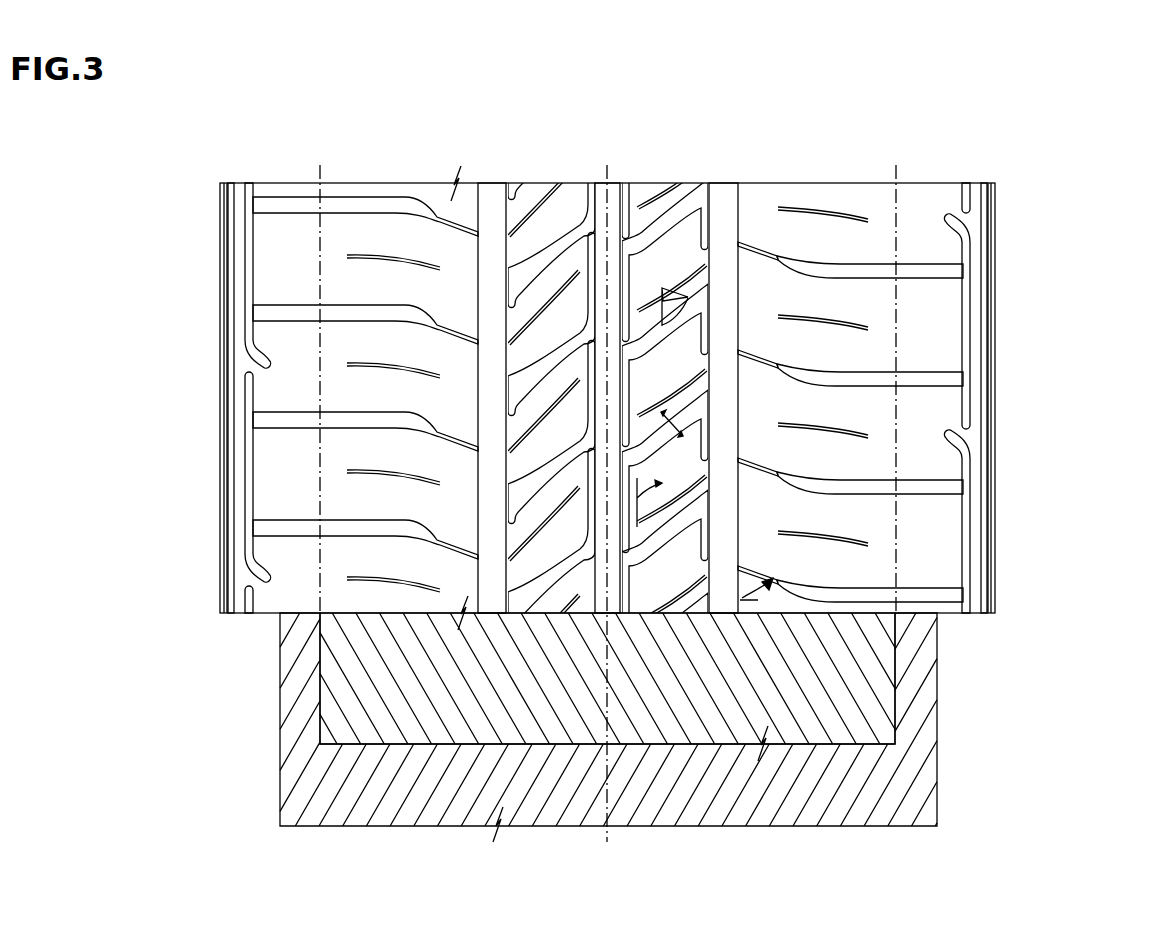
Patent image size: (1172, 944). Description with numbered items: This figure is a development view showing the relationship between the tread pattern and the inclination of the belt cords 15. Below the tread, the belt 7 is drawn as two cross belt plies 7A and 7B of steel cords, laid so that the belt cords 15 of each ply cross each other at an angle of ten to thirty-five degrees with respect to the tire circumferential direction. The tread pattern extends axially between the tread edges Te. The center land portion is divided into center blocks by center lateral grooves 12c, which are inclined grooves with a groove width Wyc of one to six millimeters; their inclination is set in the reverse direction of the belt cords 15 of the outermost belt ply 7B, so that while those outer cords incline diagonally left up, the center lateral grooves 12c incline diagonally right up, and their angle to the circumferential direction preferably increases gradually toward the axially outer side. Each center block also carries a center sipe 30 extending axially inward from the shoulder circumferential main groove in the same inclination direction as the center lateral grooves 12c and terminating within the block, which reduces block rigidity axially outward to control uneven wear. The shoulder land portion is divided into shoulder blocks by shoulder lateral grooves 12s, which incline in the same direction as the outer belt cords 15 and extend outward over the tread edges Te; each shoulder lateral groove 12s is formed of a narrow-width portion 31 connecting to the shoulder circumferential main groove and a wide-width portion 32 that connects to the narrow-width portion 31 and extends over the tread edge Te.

The tread edge Te is at (320, 183).
The center lateral groove 12c is at (673, 330).
The groove width of center lateral groove Wyc is at (690, 414).
The narrow-width portion 31 is at (740, 467).
The wide-width portion 32 is at (855, 480).
The shoulder lateral groove 12s is at (947, 422).
The center sipe 30 is at (700, 492).
The belt cords 15 is at (385, 680).
The outermost belt ply 7B is at (896, 718).
The belt ply 7A is at (937, 783).
The belt 7 is at (707, 719).